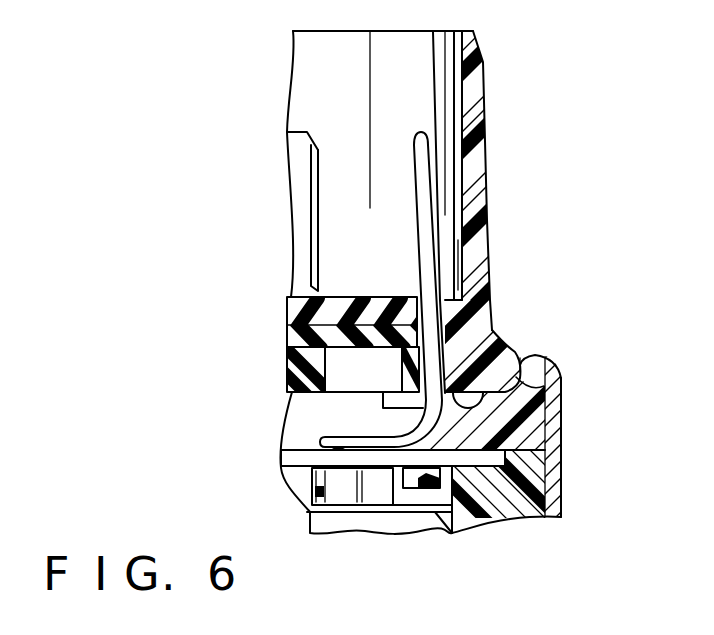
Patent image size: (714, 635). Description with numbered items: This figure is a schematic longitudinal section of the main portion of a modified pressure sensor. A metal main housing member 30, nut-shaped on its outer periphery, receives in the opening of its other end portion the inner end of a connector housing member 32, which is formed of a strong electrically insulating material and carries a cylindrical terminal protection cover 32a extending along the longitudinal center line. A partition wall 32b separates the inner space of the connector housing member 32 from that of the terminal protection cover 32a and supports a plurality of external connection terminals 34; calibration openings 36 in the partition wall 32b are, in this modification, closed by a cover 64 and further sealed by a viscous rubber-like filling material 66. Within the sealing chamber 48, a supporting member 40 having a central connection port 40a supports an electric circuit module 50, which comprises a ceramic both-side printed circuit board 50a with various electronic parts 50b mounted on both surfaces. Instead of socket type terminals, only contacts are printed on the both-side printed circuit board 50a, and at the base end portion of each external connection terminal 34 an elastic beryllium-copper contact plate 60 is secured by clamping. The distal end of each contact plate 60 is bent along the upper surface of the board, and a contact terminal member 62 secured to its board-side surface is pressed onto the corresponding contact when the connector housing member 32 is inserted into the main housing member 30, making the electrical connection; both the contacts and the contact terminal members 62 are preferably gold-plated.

The main housing member 30 is at (563, 423).
The connector housing member 32 is at (500, 312).
The terminal protection cover 32a is at (480, 96).
The partition wall 32b is at (458, 290).
The external connection terminals 34 is at (413, 163).
The calibration openings 36 is at (330, 372).
The supporting member 40 is at (525, 520).
The central connection port 40a is at (325, 536).
The sealing chamber 48 is at (498, 345).
The electric circuit module 50 is at (556, 384).
The both-side printed circuit board 50a is at (285, 468).
The electronic parts 50b is at (308, 512).
The contact plate 60 is at (376, 440).
The contact terminal members 62 is at (335, 450).
The cover 64 is at (292, 338).
The filling material 66 is at (292, 304).